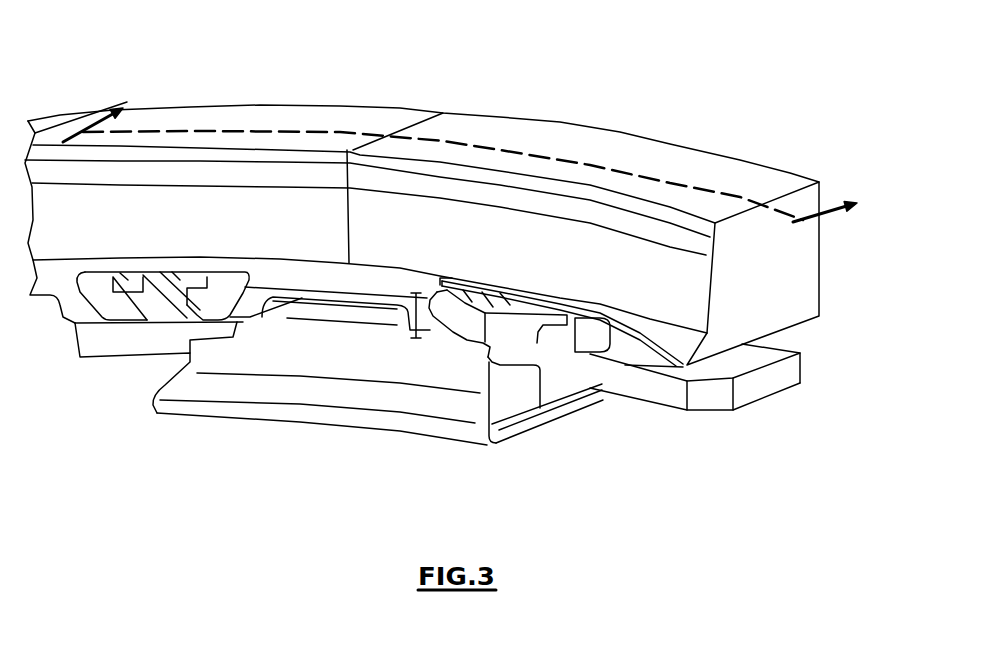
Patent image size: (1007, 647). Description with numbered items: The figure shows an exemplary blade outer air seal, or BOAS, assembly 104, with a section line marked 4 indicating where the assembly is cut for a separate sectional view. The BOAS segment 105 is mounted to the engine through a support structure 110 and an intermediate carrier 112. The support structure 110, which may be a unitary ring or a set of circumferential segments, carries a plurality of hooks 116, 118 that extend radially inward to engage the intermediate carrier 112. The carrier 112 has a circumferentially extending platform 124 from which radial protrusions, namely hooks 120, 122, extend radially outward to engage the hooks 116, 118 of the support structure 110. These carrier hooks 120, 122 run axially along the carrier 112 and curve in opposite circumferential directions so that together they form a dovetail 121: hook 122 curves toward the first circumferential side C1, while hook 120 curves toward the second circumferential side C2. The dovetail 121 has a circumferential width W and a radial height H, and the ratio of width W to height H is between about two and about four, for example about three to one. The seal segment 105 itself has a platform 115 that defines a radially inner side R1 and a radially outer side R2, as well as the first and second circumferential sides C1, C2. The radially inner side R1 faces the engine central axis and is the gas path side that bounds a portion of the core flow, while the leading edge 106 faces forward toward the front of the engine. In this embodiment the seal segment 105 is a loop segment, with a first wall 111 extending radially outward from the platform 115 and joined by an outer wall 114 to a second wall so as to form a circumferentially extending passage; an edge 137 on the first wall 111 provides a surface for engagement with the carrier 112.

The BOAS assembly 104 is at (194, 62).
The section line 4- 4 is at (469, 153).
The support structure 110 is at (650, 152).
The first wall 111 is at (207, 355).
The leading edge 106 is at (197, 417).
The outer wall 114 is at (363, 313).
The hook 116 is at (433, 330).
The hook 120 is at (447, 307).
The hook 122 is at (583, 330).
The dovetail 121 is at (452, 357).
The BOAS segment 105 is at (455, 413).
The edge 137 is at (490, 445).
The platform 115 is at (574, 398).
The hook 118 is at (607, 352).
The intermediate carrier 112 is at (708, 397).
The platform 124 is at (662, 397).
The radial height H is at (412, 302).
The circumferential width W is at (442, 277).
The first circumferential side C1 is at (500, 440).
The second circumferential side C2 is at (148, 405).
The radially inner side R1 is at (547, 420).
The radially outer side R2 is at (570, 412).